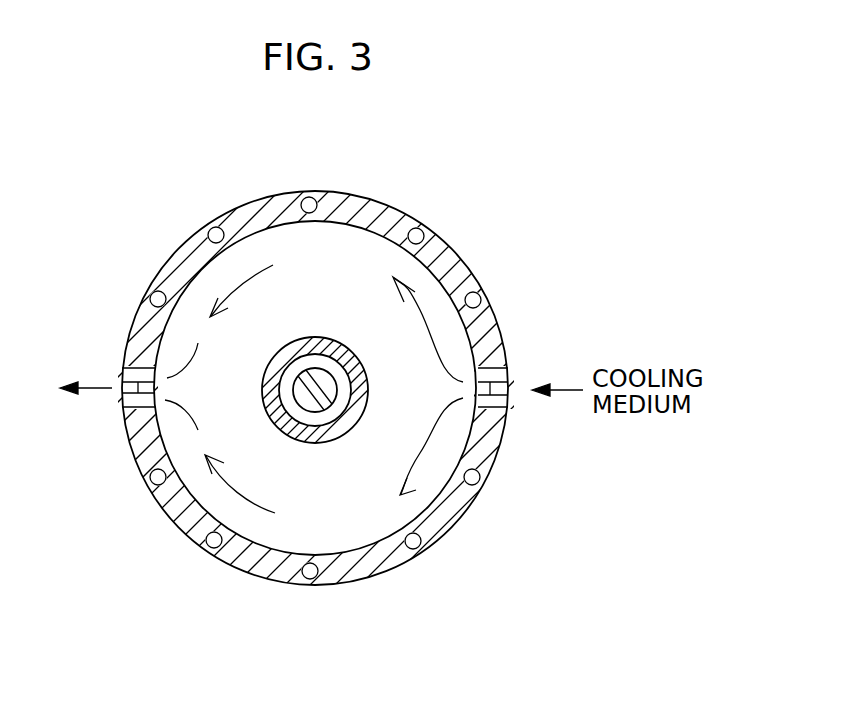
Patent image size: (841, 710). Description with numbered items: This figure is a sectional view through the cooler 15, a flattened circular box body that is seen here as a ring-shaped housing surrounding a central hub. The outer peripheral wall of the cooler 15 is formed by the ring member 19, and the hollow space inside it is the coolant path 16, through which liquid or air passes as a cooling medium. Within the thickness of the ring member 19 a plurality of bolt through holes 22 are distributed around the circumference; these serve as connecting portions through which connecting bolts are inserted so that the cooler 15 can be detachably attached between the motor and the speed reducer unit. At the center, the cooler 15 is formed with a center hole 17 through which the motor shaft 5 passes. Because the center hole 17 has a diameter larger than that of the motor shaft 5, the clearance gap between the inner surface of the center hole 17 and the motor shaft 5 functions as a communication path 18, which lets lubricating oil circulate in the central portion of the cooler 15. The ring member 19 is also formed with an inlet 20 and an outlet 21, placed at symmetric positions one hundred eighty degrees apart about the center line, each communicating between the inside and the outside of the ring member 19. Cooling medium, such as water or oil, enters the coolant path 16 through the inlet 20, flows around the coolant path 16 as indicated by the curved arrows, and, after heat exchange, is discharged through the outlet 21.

The motor shaft 5 is at (325, 372).
The cooler 15 is at (412, 206).
The coolant path 16 is at (342, 243).
The center hole 17 is at (287, 402).
The communication path 18 is at (322, 417).
The ring member 19 is at (460, 270).
The inlet 20 is at (507, 387).
The outlet 21 is at (122, 382).
The bolt through holes 22 is at (415, 549).